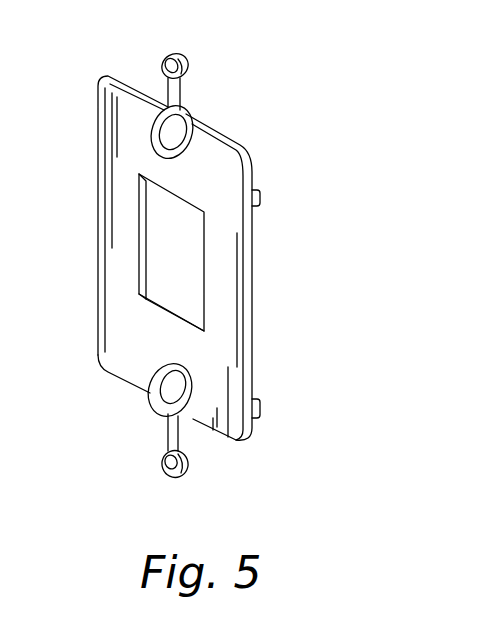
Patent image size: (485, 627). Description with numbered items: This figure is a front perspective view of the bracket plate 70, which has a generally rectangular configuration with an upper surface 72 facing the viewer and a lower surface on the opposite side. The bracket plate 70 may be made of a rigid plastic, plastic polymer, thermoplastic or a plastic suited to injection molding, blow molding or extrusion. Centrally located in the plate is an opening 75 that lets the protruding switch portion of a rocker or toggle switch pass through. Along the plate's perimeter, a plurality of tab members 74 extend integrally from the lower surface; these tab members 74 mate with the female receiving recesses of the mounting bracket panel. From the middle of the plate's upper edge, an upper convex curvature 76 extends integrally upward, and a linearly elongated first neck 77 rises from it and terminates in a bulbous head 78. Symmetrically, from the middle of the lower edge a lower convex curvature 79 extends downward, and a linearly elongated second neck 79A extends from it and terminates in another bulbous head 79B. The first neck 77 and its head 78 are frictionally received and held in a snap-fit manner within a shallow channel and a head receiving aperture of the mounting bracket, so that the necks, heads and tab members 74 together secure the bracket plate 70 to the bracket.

The bracket plate 70 is at (98, 213).
The upper surface 72 is at (112, 137).
The tab members 74 is at (262, 200).
The opening 75 is at (160, 267).
The upper convex curvature 76 is at (197, 118).
The first neck 77 is at (182, 93).
The bulbous head 78 is at (189, 60).
The lower convex curvature 79 is at (153, 412).
The second neck 79A is at (183, 437).
The bulbous head 79B is at (161, 467).